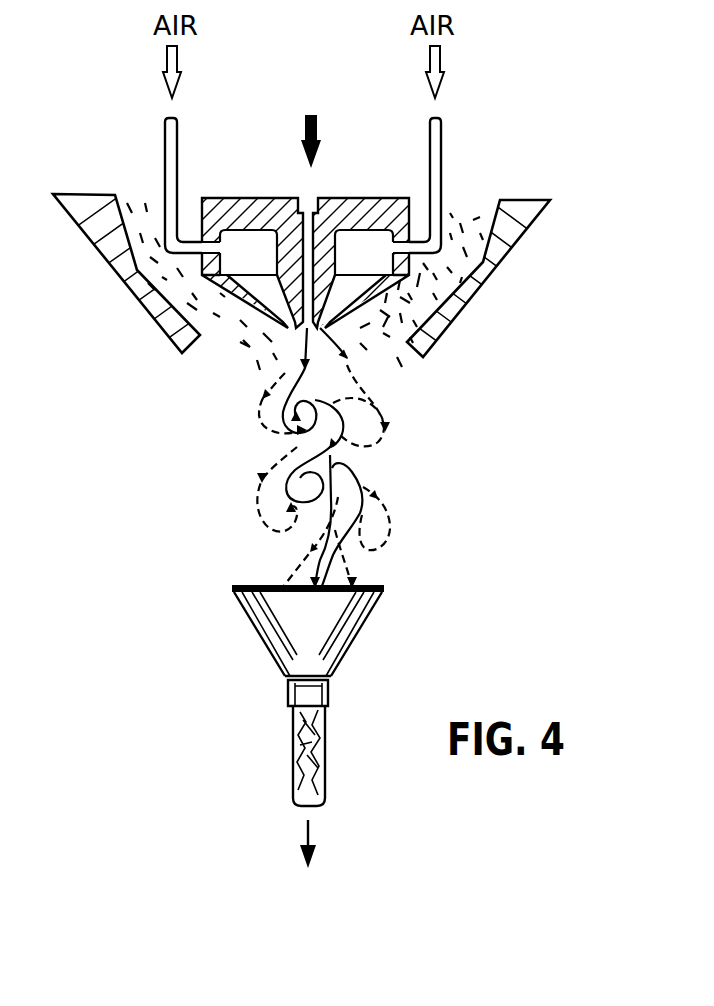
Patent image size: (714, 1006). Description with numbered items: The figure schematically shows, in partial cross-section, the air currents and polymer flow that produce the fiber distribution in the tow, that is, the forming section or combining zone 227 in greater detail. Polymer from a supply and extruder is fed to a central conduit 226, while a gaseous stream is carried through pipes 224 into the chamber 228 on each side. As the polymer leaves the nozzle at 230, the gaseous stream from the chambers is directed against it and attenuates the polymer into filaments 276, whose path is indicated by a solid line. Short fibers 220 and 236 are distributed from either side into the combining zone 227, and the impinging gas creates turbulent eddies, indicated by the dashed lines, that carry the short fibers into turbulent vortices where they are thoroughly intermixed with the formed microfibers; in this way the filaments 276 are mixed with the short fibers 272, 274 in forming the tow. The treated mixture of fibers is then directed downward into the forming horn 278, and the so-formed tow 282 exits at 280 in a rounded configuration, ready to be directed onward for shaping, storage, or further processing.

The short fibers 220 is at (198, 323).
The pipes 224 is at (170, 118).
The conduit 226 is at (307, 200).
The combining zone 227 is at (430, 420).
The chamber 228 is at (250, 248).
The nozzle exit 230 is at (295, 330).
The short fibers 236 is at (432, 268).
The short fibers 272 is at (263, 525).
The short fibers 274 is at (392, 515).
The filaments 276 is at (293, 441).
The forming horn 278 is at (353, 596).
The exit 280 is at (333, 713).
The tow 282 is at (292, 760).